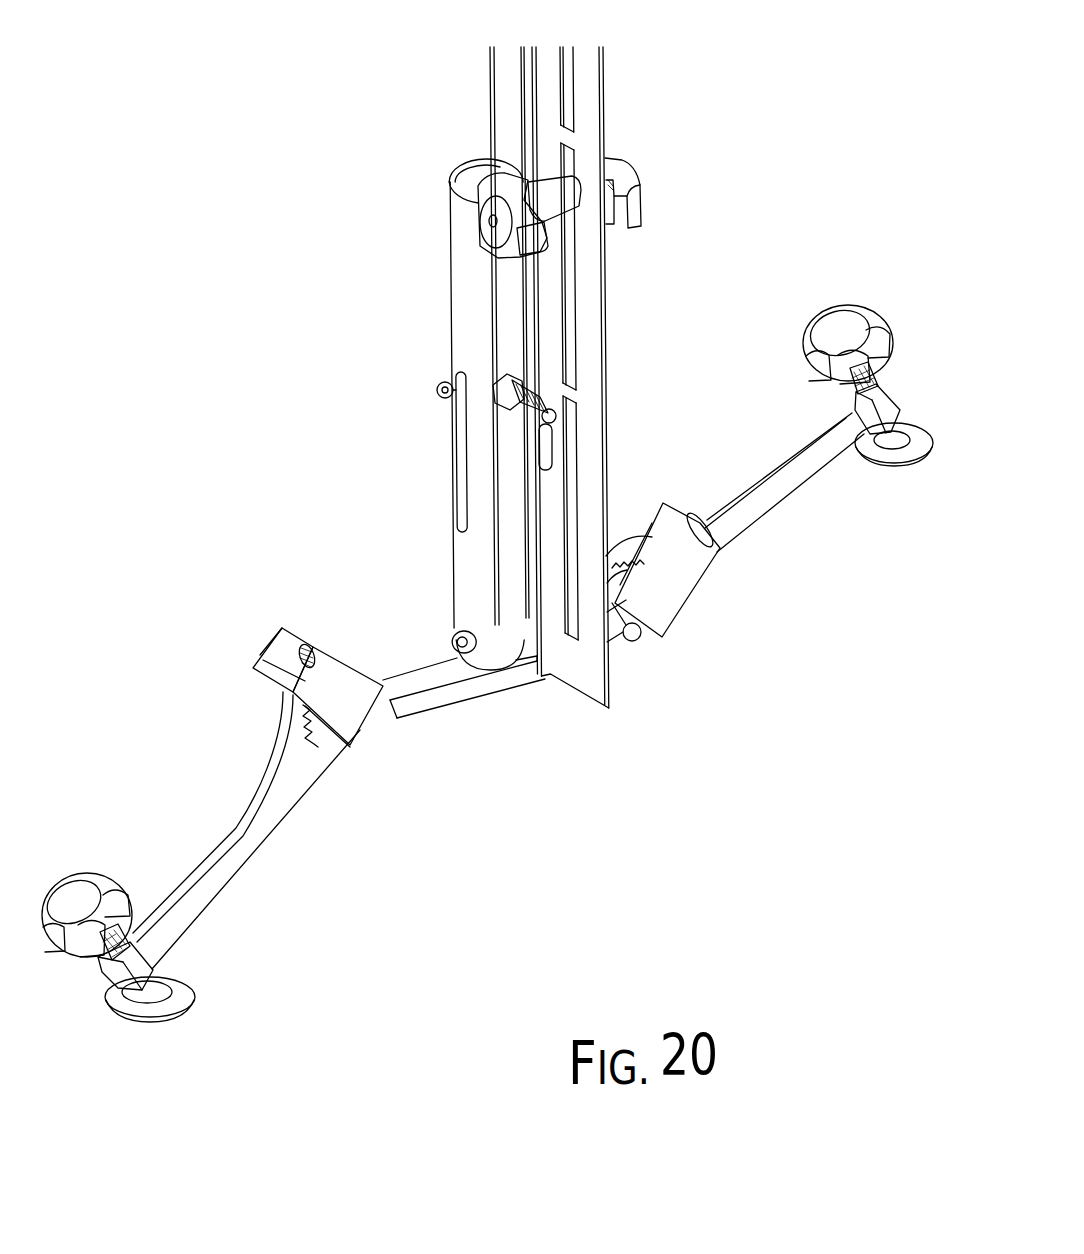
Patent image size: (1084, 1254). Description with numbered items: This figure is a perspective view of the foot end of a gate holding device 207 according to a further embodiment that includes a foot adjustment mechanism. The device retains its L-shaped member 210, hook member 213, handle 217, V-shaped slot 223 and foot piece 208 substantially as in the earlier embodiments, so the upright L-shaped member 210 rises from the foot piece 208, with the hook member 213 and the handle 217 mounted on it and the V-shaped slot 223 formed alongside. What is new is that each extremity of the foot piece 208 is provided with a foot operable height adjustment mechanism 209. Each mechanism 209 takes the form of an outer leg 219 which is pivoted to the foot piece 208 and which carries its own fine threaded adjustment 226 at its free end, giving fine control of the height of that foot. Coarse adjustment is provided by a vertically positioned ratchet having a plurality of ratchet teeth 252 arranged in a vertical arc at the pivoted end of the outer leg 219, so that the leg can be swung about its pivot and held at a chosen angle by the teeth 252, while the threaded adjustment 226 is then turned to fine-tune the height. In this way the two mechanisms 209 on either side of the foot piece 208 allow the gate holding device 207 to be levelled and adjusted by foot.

The gate holding device 207 is at (501, 534).
The foot piece 208 is at (462, 695).
The foot operable height adjustment mechanism 209 is at (501, 633).
The L-shaped member 210 is at (592, 330).
The hook member 213 is at (641, 200).
The handle 217 is at (497, 180).
The outer leg 219 is at (237, 862).
The V-shaped slot 223 is at (458, 470).
The fine threaded adjustment 226 is at (102, 855).
The ratchet teeth 252 is at (316, 730).